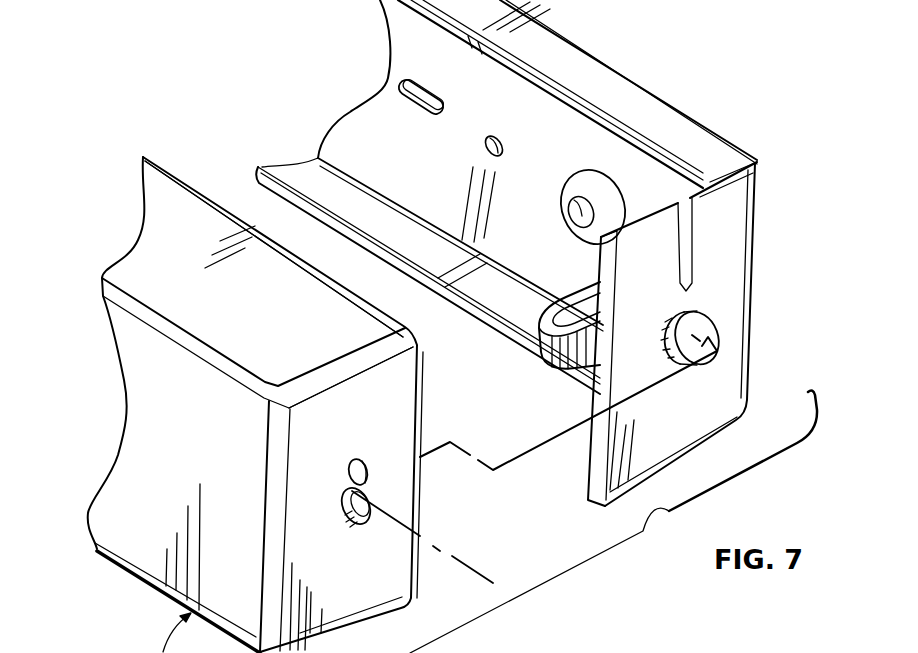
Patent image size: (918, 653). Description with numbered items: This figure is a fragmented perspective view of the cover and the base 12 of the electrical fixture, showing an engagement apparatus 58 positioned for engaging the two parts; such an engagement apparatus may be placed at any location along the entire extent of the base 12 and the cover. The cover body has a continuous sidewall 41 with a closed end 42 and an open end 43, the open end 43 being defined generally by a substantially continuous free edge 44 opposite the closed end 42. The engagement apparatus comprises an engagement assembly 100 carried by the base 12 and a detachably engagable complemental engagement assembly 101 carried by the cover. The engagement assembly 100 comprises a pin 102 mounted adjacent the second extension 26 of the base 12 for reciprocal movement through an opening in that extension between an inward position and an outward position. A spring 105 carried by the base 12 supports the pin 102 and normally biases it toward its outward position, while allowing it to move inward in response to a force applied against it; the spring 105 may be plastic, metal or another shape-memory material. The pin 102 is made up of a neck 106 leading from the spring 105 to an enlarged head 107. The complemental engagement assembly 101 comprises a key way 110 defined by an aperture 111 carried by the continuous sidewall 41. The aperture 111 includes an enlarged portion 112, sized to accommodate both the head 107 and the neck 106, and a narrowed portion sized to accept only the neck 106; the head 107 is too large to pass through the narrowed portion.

The base 12 is at (675, 130).
The second extension 26 is at (722, 408).
The continuous sidewall 41 is at (207, 222).
The closed end 42 is at (143, 554).
The open end 43 is at (437, 366).
The free edge 44 is at (350, 282).
The engagement apparatus 58 is at (689, 392).
The engagement assembly 100 is at (545, 371).
The complemental engagement assembly 101 is at (368, 448).
The pin 102 is at (660, 346).
The spring 105 is at (542, 340).
The neck 106 is at (683, 313).
The enlarged head 107 is at (700, 340).
The key way 110 is at (350, 526).
The aperture 111 is at (353, 504).
The enlarged portion 112 is at (377, 521).